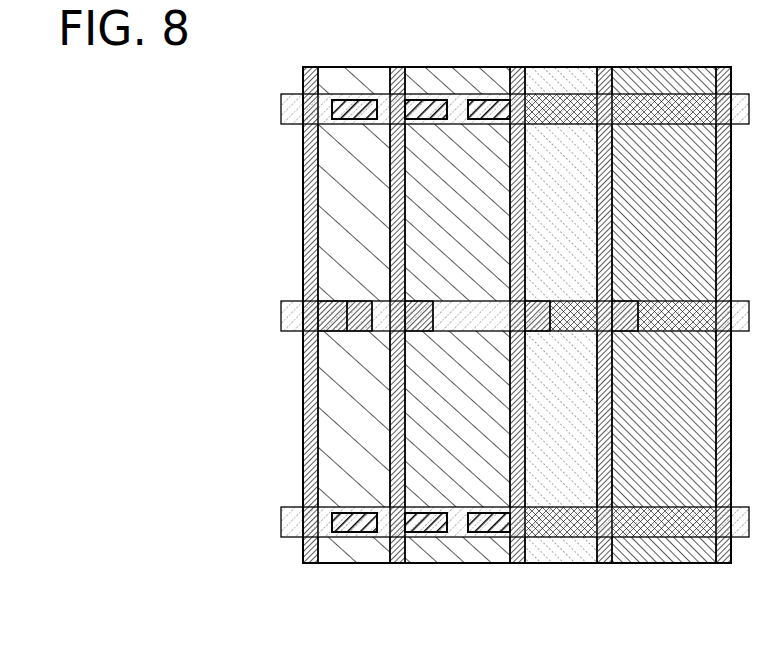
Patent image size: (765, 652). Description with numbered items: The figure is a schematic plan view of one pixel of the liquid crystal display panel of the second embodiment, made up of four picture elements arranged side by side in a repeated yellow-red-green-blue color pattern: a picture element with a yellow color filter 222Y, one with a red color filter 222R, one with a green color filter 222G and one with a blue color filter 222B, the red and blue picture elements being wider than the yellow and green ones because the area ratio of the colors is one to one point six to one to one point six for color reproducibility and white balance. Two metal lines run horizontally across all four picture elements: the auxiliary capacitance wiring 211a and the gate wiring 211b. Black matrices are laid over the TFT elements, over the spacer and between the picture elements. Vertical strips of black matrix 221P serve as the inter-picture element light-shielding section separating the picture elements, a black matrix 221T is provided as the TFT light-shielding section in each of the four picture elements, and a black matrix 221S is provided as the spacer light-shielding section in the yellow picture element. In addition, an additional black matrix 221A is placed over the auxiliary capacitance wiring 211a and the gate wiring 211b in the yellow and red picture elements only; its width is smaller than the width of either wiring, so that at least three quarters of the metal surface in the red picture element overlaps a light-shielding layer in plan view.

The auxiliary capacitance wiring 211a is at (283, 108).
The gate wiring 211b is at (283, 315).
The black matrix (inter-picture element light-shielding section) 221P is at (305, 190).
The black matrix (TFT light-shielding section) 221T is at (333, 301).
The black matrix (spacer light-shielding section) 221S is at (353, 331).
The additional black matrix 221A is at (372, 535).
The yellow color filter 222Y is at (355, 80).
The red color filter 222R is at (455, 80).
The green color filter 222G is at (560, 80).
The blue color filter 222B is at (665, 80).